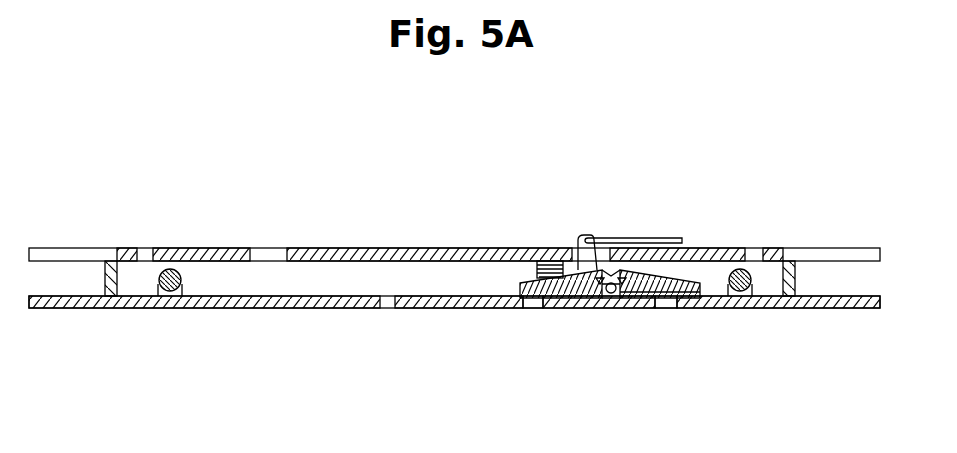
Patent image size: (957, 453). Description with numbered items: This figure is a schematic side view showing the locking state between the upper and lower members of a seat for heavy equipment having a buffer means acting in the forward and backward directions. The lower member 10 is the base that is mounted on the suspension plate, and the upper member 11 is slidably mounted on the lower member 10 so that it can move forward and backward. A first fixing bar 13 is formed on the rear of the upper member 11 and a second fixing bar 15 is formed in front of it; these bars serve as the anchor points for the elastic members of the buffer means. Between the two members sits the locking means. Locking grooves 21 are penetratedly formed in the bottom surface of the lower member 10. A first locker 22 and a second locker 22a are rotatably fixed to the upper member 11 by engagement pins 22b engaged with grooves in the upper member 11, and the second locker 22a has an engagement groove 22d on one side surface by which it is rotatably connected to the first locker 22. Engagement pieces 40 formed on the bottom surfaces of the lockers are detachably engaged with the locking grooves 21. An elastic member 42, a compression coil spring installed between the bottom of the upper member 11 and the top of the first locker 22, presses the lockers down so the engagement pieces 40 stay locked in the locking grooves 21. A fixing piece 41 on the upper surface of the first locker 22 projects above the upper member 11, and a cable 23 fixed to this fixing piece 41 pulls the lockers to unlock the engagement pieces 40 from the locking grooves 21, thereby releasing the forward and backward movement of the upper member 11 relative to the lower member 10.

The lower member 10 is at (244, 338).
The upper member 11 is at (327, 226).
The first fixing bar 13 is at (740, 269).
The second fixing bar 15 is at (181, 269).
The locking grooves 21 is at (533, 300).
The first locker 22 is at (567, 300).
The second locker 22a is at (663, 300).
The engagement pins 22b is at (593, 308).
The engagement groove 22d is at (610, 308).
The cable 23 is at (660, 240).
The engagement pieces 40 is at (523, 308).
The fixing piece 41 is at (580, 235).
The elastic member 42 is at (523, 248).